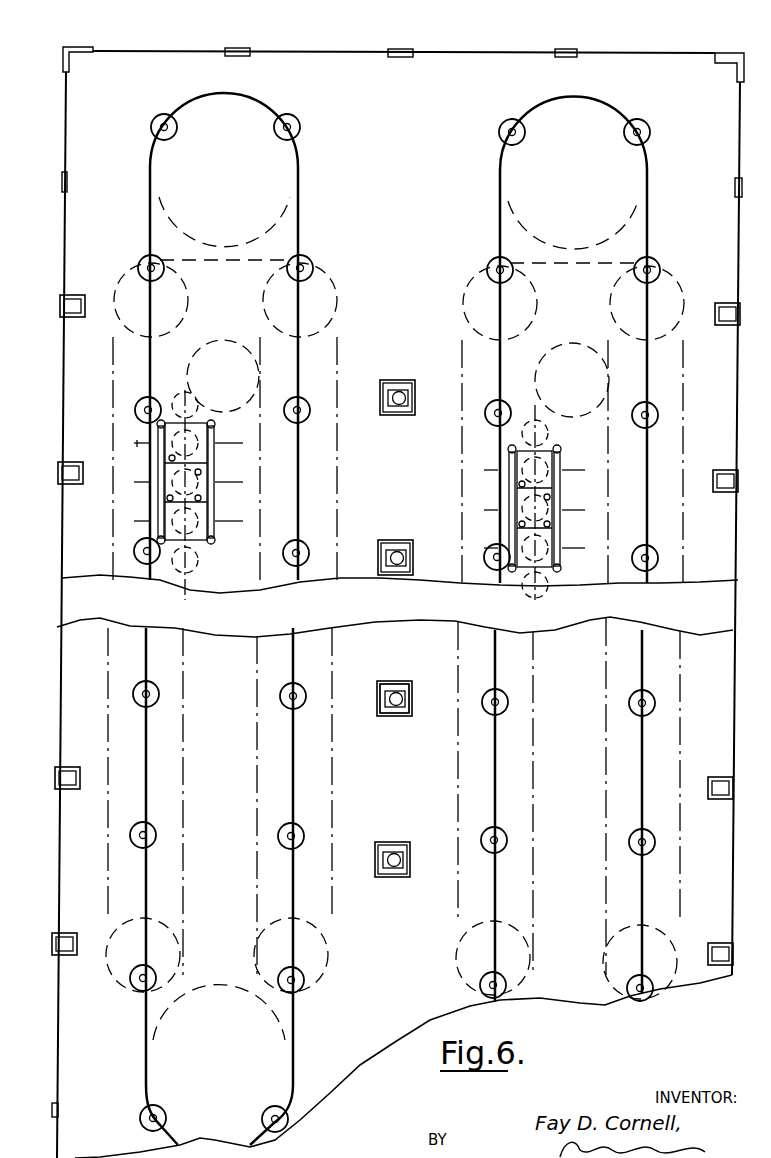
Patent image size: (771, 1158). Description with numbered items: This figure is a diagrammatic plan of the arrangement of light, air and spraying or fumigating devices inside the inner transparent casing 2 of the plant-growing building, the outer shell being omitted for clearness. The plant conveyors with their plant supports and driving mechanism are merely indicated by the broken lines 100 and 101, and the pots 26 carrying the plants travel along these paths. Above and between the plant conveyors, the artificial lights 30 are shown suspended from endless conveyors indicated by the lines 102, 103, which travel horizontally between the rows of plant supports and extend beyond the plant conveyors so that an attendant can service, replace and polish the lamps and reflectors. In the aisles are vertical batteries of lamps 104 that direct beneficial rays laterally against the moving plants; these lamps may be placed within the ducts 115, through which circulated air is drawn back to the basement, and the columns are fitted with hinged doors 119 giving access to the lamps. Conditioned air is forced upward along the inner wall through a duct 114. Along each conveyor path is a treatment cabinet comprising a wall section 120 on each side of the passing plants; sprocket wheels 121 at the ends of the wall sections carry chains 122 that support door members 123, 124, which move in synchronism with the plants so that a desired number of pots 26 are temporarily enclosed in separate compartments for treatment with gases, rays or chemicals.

The inner transparent casing 2 is at (55, 832).
The pots 26 is at (181, 396).
The artificial lights 30 is at (298, 557).
The broken line indicating a conveyor 100 is at (337, 427).
The broken line indicating a conveyor 101 is at (464, 326).
The endless conveyor line for lights 102 is at (300, 249).
The endless conveyor line for lights 103 is at (500, 207).
The vertical batteries of lamps 104 is at (398, 556).
The duct 114 is at (70, 768).
The ducts 115 is at (411, 416).
The doors 119 is at (389, 683).
The wall section 120 is at (214, 470).
The sprocket wheels 121 is at (212, 545).
The chains 122 is at (510, 530).
The door member 123 is at (141, 482).
The door member 124 is at (230, 525).